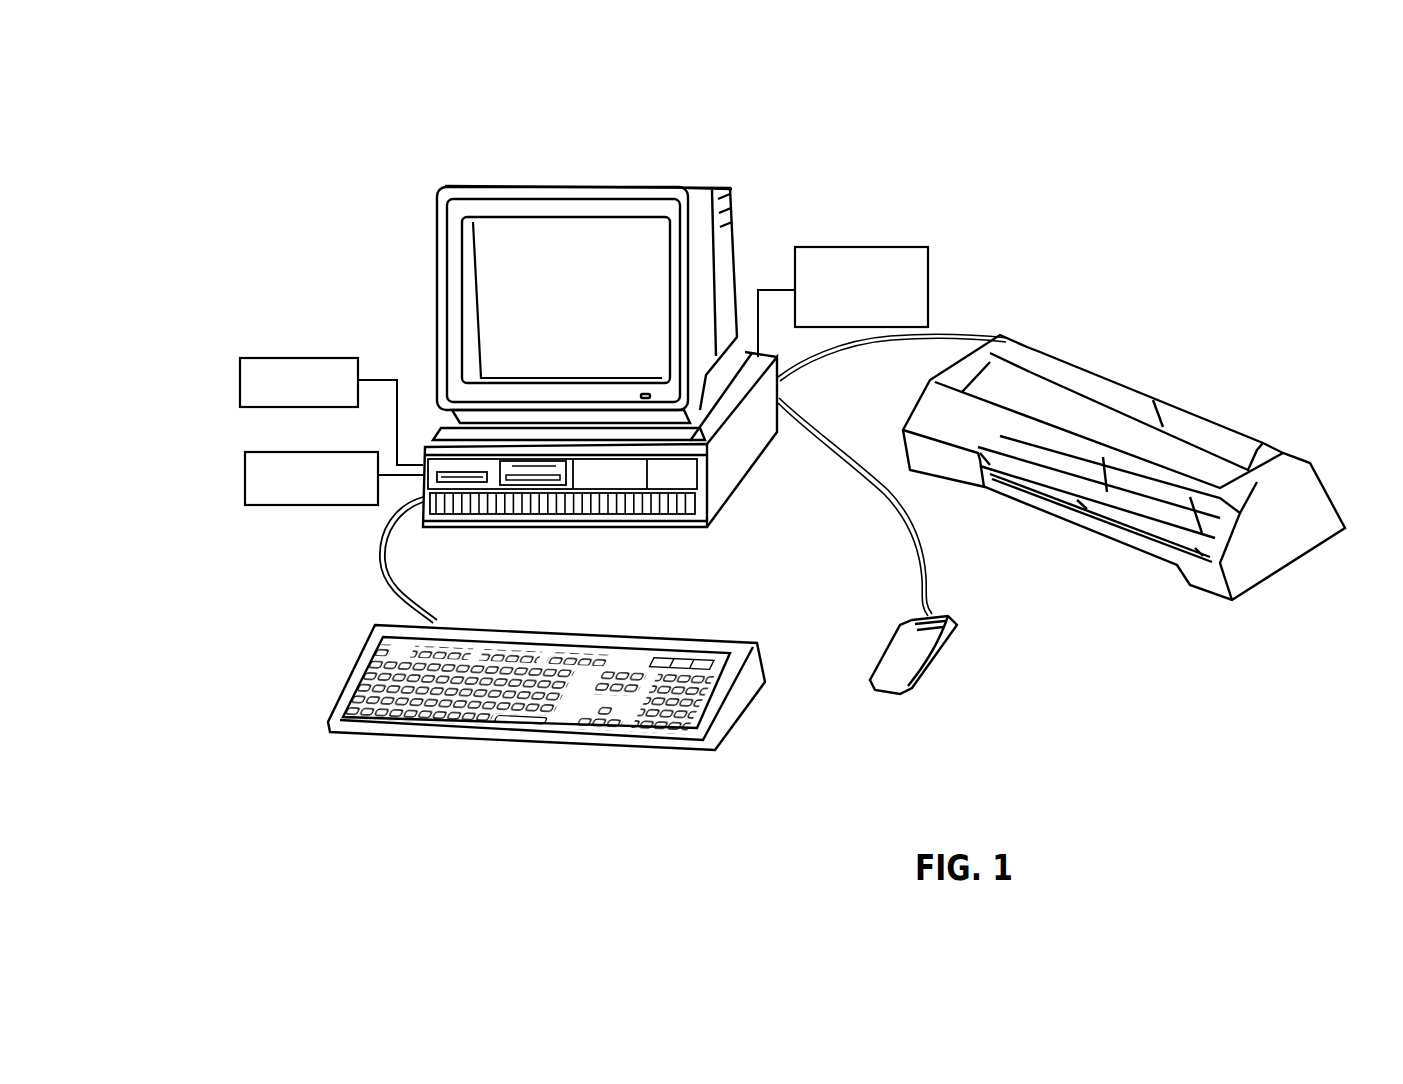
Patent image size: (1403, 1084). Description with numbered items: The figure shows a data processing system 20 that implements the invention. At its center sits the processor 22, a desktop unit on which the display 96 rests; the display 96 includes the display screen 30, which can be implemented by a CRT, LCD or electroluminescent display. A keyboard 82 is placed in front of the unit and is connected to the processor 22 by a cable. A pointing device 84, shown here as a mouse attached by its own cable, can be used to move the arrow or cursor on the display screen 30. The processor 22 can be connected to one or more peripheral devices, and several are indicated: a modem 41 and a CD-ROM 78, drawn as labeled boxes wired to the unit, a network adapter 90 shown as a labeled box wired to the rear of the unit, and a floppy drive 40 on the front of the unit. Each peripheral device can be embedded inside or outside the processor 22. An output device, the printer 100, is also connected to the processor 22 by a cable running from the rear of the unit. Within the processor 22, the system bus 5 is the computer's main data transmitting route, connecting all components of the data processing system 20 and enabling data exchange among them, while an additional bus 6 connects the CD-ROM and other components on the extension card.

The data processing system 20 is at (965, 178).
The display 96 is at (412, 253).
The display screen 30 is at (553, 295).
The processor 22 is at (709, 531).
The floppy drive 40 is at (535, 483).
The additional bus 6 is at (582, 500).
The system bus 5 is at (633, 510).
The modem 41 is at (242, 373).
The CD-ROM 78 is at (243, 468).
The network adapter 90 is at (818, 250).
The printer 100 is at (1028, 338).
The pointing device 84 is at (940, 650).
The keyboard 82 is at (495, 750).